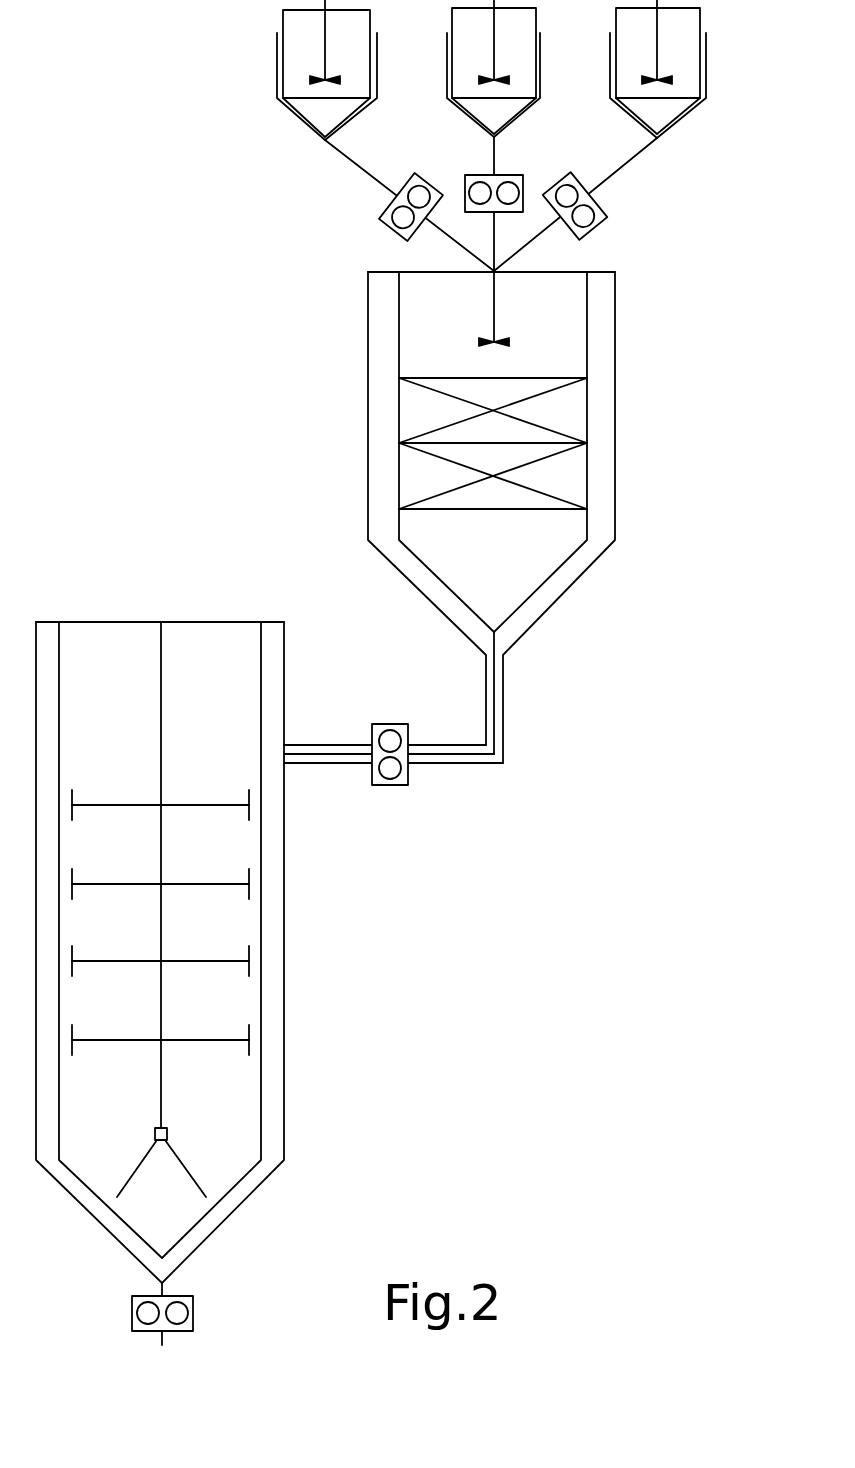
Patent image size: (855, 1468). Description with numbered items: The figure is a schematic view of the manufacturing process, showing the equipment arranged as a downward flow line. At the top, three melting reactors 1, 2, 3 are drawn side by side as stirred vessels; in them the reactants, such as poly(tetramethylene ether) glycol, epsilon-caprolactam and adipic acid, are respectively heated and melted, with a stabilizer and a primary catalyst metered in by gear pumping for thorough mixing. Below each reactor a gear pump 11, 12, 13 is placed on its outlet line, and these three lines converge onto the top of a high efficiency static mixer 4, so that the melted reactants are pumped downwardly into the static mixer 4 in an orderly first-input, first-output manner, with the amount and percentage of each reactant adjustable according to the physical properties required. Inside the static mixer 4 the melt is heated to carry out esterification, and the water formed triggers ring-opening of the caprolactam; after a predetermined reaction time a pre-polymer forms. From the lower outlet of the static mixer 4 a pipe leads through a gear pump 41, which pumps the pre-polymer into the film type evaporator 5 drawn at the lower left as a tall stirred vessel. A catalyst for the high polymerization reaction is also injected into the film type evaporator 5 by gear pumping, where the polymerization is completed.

The melting reactor 1 is at (268, 74).
The melting reactor 2 is at (440, 82).
The melting reactor 3 is at (601, 82).
The high efficiency static mixer 4 is at (576, 412).
The film type evaporator 5 is at (306, 986).
The gear pump 11 is at (386, 223).
The gear pump 12 is at (523, 175).
The gear pump 13 is at (607, 217).
The gear pump 41 is at (377, 788).